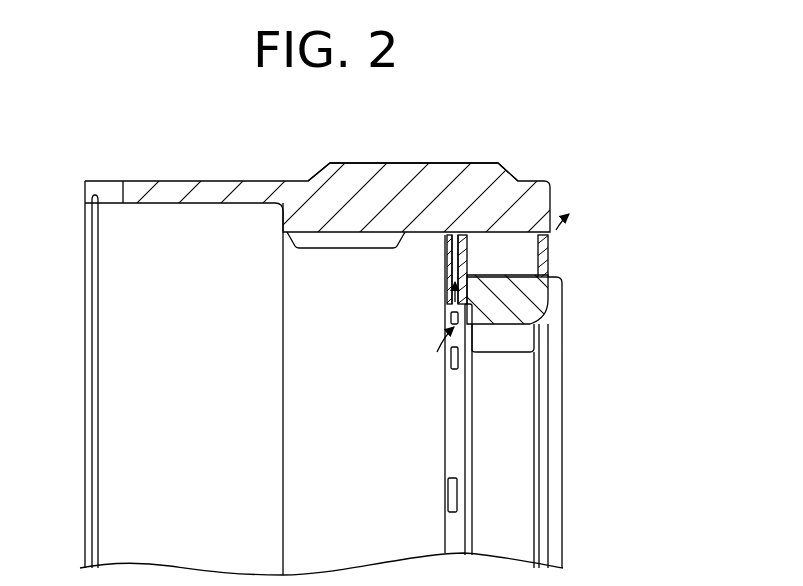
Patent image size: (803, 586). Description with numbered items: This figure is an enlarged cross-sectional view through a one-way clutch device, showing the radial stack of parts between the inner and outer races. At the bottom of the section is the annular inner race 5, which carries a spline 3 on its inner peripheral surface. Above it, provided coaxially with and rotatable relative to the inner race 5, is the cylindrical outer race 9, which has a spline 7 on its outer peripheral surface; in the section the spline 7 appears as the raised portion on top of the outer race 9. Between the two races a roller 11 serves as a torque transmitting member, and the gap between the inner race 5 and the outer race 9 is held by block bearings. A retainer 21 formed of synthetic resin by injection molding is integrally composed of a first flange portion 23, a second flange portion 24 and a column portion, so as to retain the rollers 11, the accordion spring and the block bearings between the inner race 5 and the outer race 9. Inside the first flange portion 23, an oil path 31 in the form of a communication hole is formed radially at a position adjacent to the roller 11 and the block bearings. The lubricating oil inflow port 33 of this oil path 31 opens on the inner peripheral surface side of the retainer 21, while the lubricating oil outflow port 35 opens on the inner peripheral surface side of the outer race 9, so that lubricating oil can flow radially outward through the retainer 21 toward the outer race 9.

The spline 3 is at (525, 338).
The inner race 5 is at (530, 296).
The spline 7 is at (383, 172).
The outer race 9 is at (522, 200).
The roller 11 is at (548, 250).
The retainer 21 is at (441, 402).
The first flange portion 23 is at (462, 462).
The second flange portion 24 is at (545, 238).
The oil path 31 is at (447, 276).
The lubricating oil inflow port 33 is at (445, 312).
The lubricating oil outflow port 35 is at (476, 235).